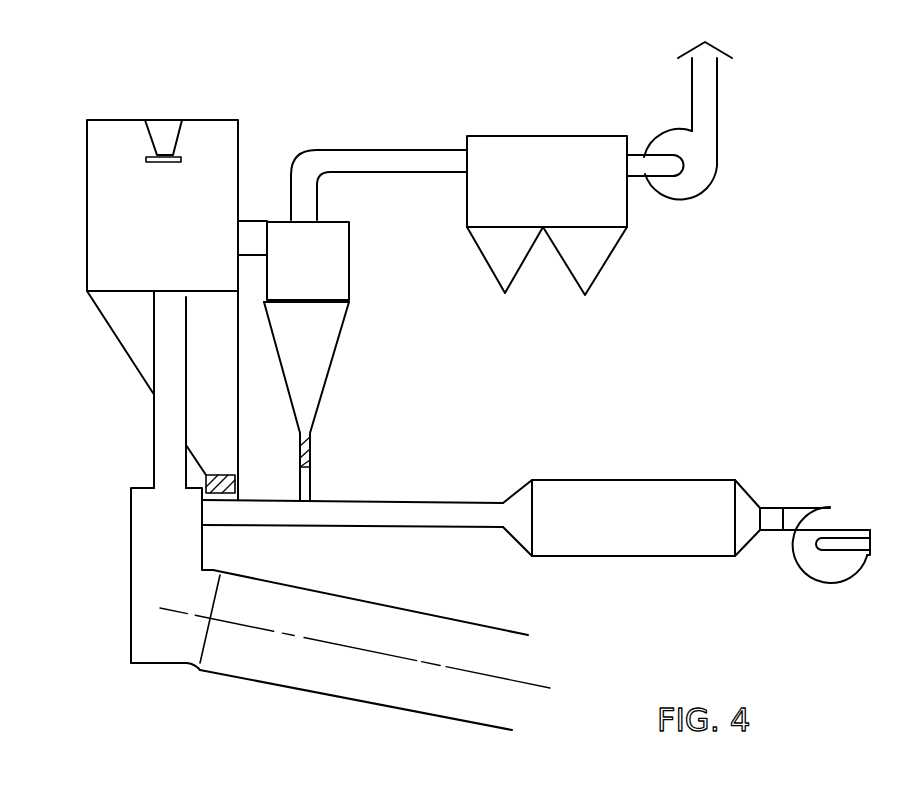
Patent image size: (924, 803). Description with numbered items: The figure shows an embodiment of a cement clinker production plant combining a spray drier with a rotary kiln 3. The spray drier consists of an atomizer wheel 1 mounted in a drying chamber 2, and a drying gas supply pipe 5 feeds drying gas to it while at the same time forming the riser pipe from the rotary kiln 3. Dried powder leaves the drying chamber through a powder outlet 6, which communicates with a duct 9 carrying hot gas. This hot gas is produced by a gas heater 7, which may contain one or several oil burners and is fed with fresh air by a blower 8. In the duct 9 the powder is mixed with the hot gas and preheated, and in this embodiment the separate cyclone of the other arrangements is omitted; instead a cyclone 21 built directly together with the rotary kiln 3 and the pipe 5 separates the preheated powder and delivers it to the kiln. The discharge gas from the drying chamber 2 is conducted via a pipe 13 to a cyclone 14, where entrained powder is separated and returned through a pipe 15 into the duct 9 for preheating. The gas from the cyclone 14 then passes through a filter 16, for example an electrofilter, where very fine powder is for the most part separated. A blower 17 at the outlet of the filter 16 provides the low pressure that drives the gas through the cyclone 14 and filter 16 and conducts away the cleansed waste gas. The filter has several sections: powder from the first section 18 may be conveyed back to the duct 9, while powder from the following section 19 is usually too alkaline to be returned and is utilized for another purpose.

The atomizer wheel 1 is at (171, 127).
The drying chamber 2 is at (238, 136).
The rotary kiln 3 is at (407, 615).
The drying gas supply pipe 5 is at (160, 407).
The powder outlet 6 is at (243, 481).
The gas heater 7 is at (642, 487).
The blower 8 is at (830, 517).
The duct 9 is at (410, 512).
The pipe 13 is at (251, 228).
The cyclone 14 is at (340, 273).
The pipe 15 is at (312, 481).
The filter 16 is at (552, 145).
The blower 17 is at (697, 185).
The first section 18 is at (488, 250).
The following section 19 is at (568, 250).
The cyclone 21 is at (142, 572).